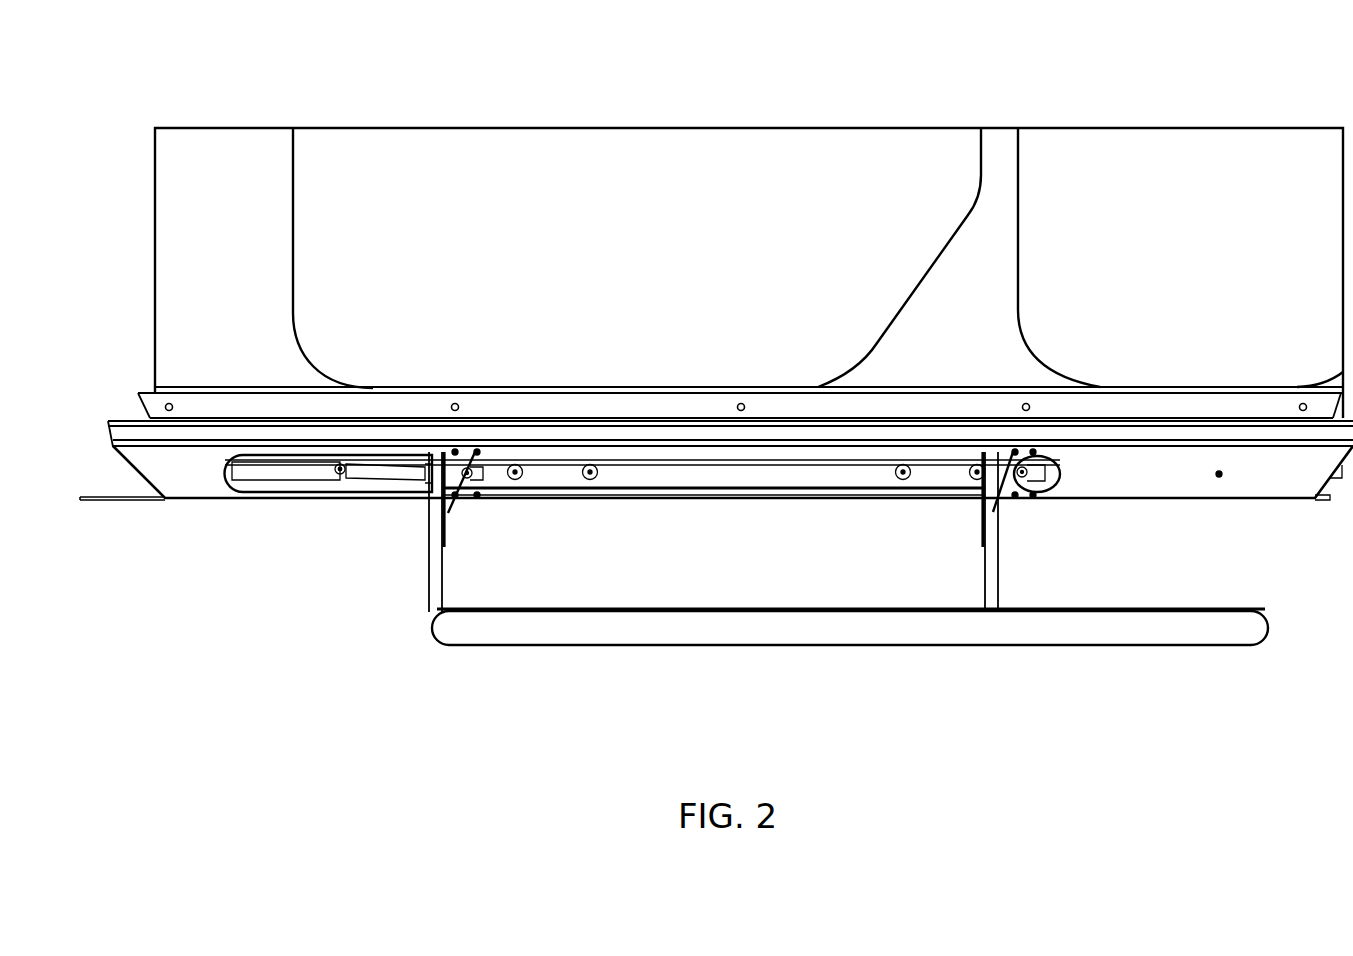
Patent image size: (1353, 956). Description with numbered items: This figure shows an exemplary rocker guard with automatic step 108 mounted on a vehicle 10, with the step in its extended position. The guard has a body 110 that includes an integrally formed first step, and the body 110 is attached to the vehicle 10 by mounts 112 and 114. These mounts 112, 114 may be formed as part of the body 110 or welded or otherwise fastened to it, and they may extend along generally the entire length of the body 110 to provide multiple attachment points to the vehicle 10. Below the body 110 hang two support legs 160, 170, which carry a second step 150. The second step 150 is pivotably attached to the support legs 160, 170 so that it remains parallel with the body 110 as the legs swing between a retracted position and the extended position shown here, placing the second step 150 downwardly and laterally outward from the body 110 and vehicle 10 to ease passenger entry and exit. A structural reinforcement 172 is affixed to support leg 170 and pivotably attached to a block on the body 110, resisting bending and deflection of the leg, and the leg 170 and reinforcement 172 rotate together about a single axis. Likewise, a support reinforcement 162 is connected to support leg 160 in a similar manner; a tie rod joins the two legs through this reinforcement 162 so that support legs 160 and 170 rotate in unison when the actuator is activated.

The vehicle 10 is at (252, 140).
The extendable bar assembly 108 is at (307, 695).
The body 110 is at (198, 482).
The mount 112 is at (125, 502).
The mount 114 is at (150, 398).
The second step 150 is at (795, 630).
The support leg 160 is at (430, 563).
The support reinforcement 162 is at (450, 505).
The support leg 170 is at (992, 578).
The structural reinforcement 172 is at (1005, 508).